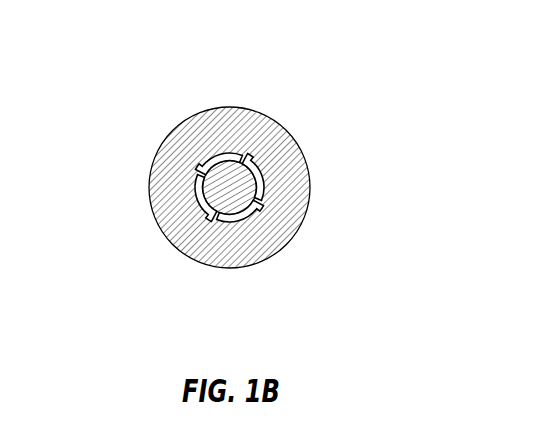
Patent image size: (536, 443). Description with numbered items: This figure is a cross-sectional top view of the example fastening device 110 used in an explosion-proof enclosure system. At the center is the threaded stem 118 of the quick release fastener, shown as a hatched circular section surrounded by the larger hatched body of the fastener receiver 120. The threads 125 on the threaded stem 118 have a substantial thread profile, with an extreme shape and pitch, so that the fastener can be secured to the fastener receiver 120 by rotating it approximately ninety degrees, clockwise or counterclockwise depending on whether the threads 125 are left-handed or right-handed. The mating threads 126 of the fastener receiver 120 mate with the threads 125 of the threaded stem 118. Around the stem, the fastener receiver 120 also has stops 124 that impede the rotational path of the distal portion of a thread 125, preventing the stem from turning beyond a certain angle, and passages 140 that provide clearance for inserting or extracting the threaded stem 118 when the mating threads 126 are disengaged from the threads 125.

The fastening device 110 is at (183, 63).
The threaded stem 118 is at (218, 174).
The fastener receiver 120 is at (311, 188).
The stop 124 is at (259, 207).
The thread 125 is at (198, 186).
The mating thread 126 is at (222, 219).
The passage 140 is at (253, 165).